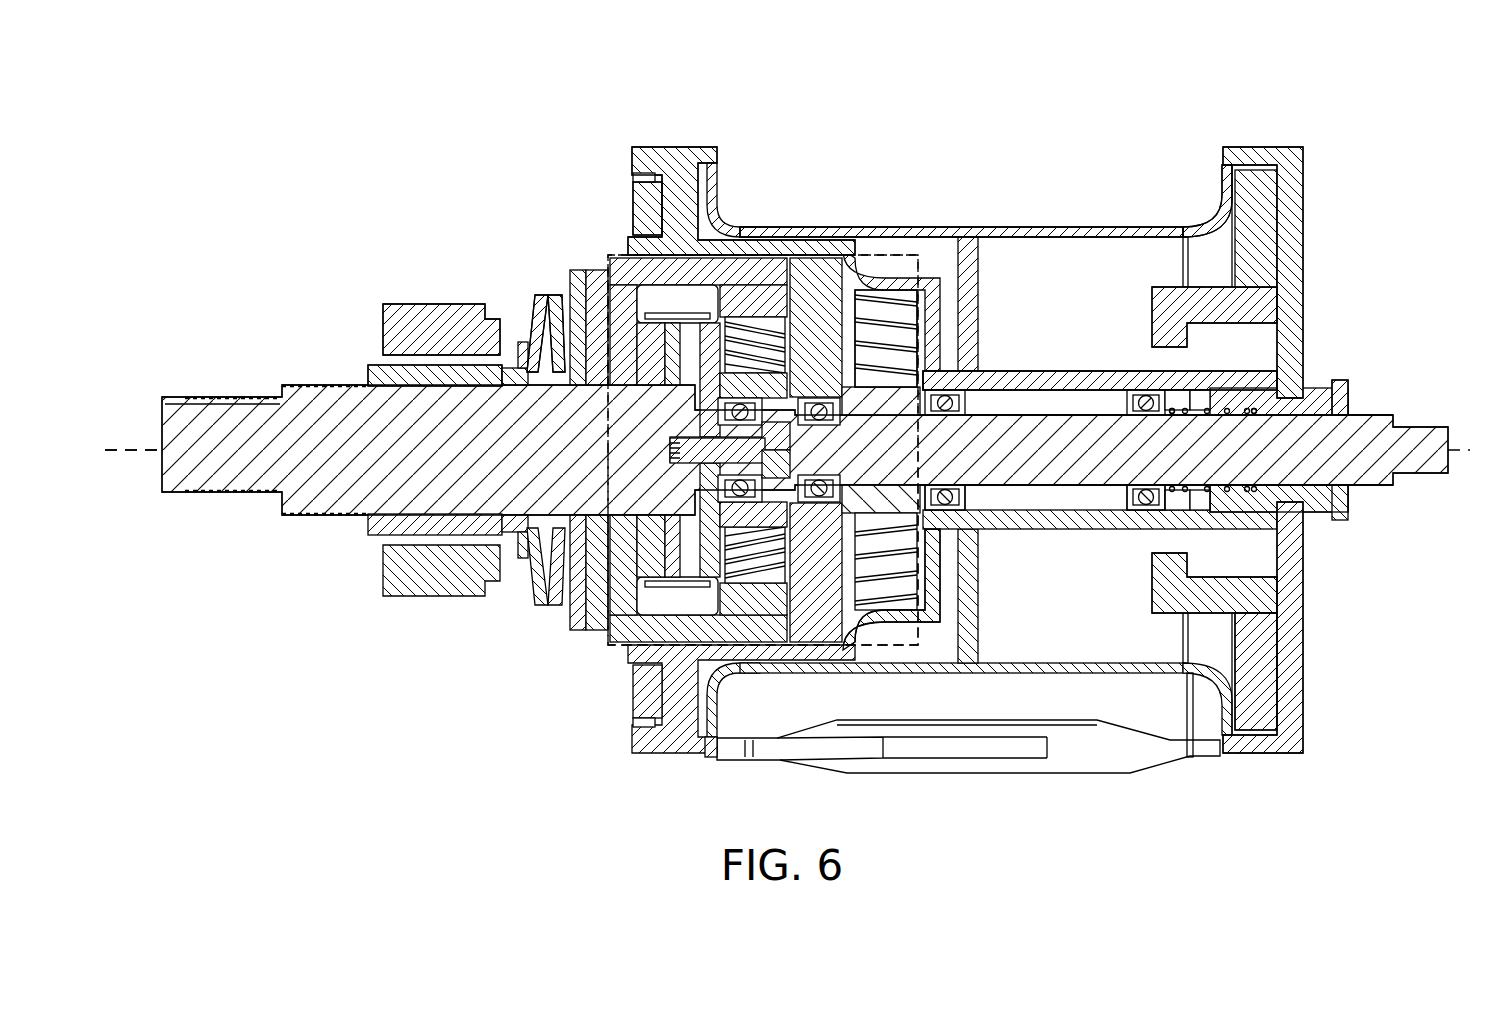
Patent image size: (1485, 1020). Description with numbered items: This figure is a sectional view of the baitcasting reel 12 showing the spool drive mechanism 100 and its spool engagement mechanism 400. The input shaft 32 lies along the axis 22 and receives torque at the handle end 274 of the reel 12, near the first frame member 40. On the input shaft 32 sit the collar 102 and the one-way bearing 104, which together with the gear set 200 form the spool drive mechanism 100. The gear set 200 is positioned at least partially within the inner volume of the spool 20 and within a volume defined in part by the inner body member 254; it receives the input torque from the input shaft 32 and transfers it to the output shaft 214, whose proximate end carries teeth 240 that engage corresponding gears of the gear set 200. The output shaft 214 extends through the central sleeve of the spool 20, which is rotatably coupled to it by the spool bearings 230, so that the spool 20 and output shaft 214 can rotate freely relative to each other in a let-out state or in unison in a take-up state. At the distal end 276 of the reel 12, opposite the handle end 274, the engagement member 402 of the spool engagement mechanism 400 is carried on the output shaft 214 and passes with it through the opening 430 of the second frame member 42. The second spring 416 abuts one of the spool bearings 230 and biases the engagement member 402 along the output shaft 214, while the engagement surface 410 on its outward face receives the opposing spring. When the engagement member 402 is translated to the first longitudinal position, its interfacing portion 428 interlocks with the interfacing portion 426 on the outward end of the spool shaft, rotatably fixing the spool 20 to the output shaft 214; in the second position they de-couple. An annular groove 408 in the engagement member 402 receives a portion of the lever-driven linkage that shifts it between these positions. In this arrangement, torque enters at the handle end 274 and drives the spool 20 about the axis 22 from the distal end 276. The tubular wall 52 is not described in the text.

The spool drive mechanism 100 is at (360, 120).
The reel 12 is at (500, 97).
The gear set 200 is at (545, 183).
The handle end 274 is at (392, 216).
The one-way bearing 104 is at (445, 303).
The first frame member 40 is at (660, 232).
The spool 20 is at (944, 227).
The second frame member 42 is at (1268, 228).
The distal end 276 is at (1378, 214).
The spool engagement mechanism 400 is at (1312, 338).
The collar 102 is at (368, 372).
The axis 22 is at (137, 450).
The engagement surface 410 is at (1345, 392).
The input shaft 32 is at (388, 469).
The teeth 240 is at (895, 406).
The output shaft 214 is at (1120, 469).
The second spring 416 is at (1185, 415).
The tube wall 52 is at (1008, 405).
The interfacing portion 426 is at (1133, 380).
The spool bearings 230 is at (948, 510).
The inner body member 254 is at (940, 595).
The interfacing portion 428 is at (1193, 520).
The annular groove 408 is at (1318, 505).
The engagement member 402 is at (1248, 515).
The opening 430 is at (1262, 560).